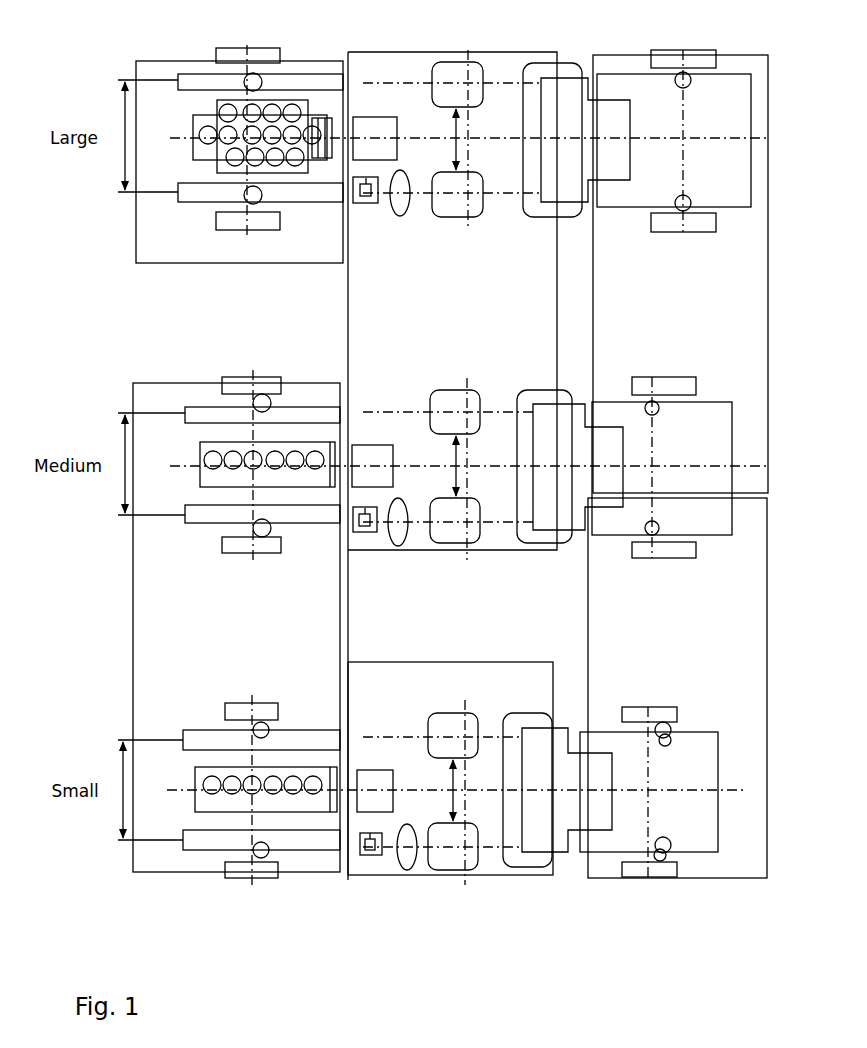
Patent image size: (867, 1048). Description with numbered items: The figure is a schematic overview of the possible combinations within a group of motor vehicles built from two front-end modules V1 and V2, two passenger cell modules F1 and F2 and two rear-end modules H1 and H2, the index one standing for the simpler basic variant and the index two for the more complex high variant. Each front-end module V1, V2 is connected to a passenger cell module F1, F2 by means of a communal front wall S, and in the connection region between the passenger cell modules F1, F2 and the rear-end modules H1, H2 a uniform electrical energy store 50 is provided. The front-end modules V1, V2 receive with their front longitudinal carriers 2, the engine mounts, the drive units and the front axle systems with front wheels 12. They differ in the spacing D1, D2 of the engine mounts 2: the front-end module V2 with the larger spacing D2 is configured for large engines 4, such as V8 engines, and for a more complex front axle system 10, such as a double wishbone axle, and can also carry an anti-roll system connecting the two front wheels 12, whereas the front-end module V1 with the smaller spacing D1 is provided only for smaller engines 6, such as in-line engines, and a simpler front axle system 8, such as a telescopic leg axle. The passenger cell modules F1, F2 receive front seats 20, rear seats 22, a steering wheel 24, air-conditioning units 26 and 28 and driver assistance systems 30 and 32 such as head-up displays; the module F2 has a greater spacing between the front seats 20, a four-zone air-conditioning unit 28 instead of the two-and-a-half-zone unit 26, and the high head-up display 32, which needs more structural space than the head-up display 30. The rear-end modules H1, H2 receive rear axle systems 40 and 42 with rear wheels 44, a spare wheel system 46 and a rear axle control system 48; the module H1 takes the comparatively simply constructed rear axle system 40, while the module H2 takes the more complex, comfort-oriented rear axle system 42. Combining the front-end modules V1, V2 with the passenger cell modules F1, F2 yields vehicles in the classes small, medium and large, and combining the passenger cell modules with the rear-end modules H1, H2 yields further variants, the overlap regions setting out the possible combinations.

The front longitudinal carrier 2 is at (193, 80).
The large engine 4 is at (285, 168).
The smaller engine 6 is at (300, 460).
The front axle system 8 is at (176, 534).
The front axle system 10 is at (256, 70).
The front wheel 12 is at (228, 50).
The front seat 20 is at (455, 70).
The rear seat 22 is at (540, 70).
The steering wheel 24 is at (411, 868).
The air-conditioning unit 26 is at (365, 778).
The air-conditioning unit 28 is at (372, 125).
The driver assistance system 30 is at (365, 860).
The driver assistance system 32 is at (360, 205).
The rear axle system 40 is at (686, 851).
The rear axle system 42 is at (727, 78).
The rear wheel 44 is at (665, 55).
The spare wheel system 46 is at (700, 742).
The rear axle control system 48 is at (740, 462).
The electrical energy store 50 is at (563, 85).
The front wall S is at (348, 58).
The passenger cell module F1 is at (493, 870).
The passenger cell module F2 is at (415, 55).
The rear-end module H1 is at (748, 870).
The rear-end module H2 is at (762, 62).
The front-end module V1 is at (135, 628).
The front-end module V2 is at (145, 238).
The spacing D1 is at (146, 626).
The spacing D2 is at (143, 136).